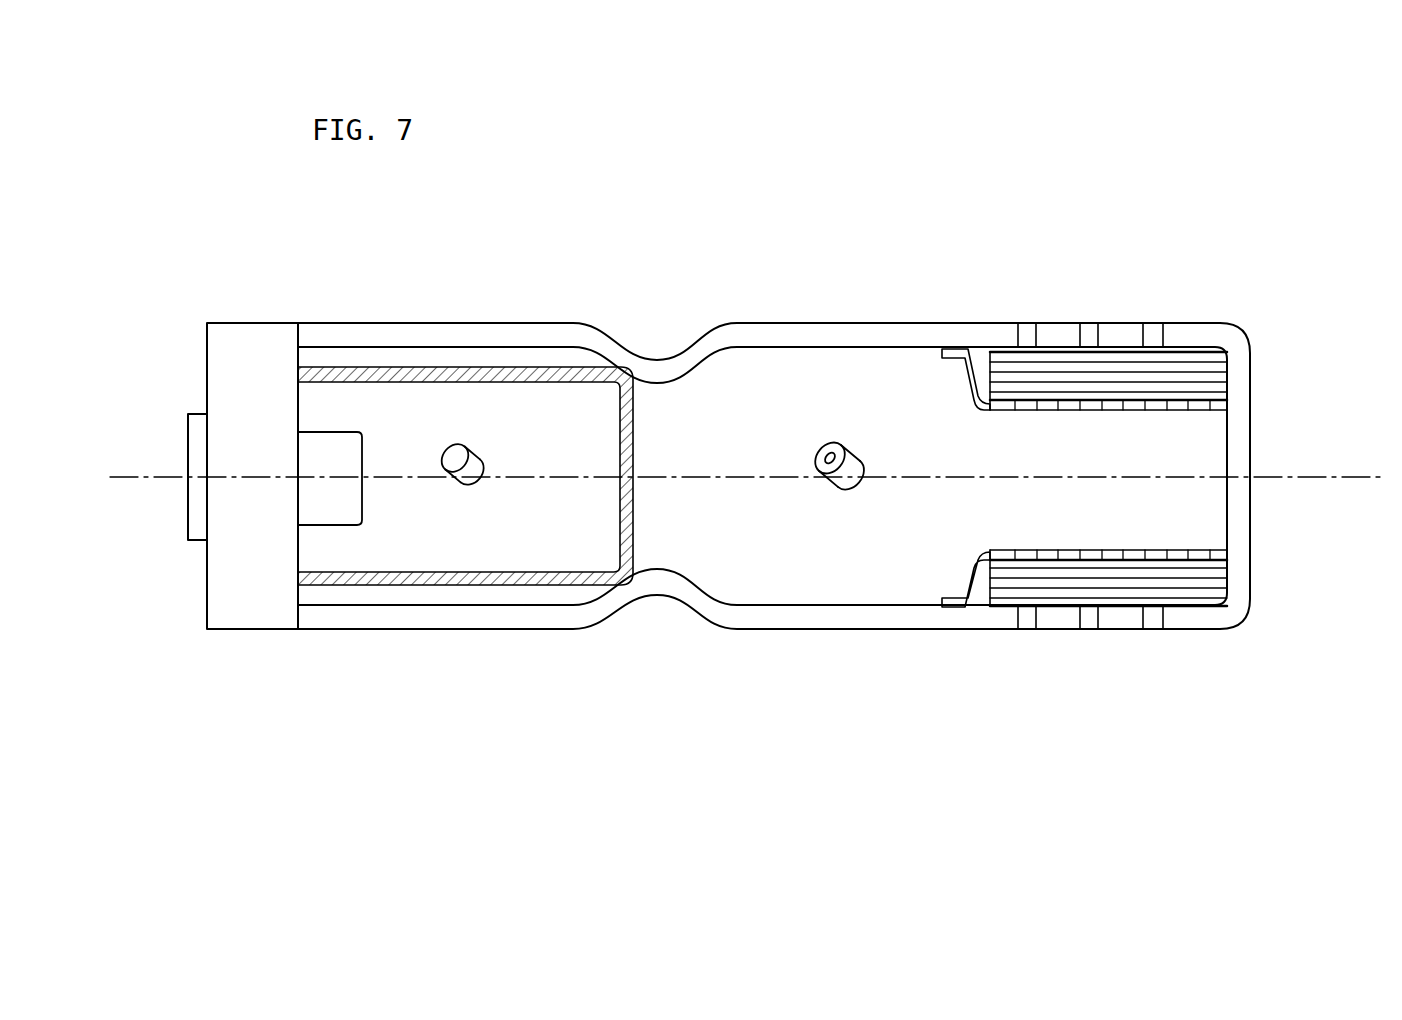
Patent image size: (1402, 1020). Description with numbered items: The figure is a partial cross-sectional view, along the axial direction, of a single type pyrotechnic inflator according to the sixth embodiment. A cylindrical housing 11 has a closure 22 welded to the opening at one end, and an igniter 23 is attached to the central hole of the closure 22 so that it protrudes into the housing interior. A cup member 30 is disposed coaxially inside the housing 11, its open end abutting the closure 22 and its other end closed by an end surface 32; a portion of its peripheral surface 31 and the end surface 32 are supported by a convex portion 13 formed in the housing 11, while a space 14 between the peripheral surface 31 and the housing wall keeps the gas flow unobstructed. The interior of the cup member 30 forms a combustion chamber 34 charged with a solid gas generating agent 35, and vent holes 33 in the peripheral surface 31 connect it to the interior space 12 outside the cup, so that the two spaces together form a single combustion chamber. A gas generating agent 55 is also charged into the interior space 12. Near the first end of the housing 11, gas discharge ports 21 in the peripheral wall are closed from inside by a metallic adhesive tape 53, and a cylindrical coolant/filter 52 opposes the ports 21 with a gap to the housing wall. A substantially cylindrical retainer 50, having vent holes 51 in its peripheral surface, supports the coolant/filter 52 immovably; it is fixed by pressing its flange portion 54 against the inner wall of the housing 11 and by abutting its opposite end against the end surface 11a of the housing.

The cylindrical housing 11 is at (770, 320).
The end surface of the cylindrical housing 11a is at (1225, 515).
The interior space 12 is at (860, 577).
The convex portion 13 is at (657, 386).
The space 14 is at (513, 355).
The gas discharge ports 21 is at (1153, 338).
The closure 22 is at (228, 372).
The igniter 23 is at (193, 432).
The cup member 30 is at (528, 475).
The peripheral surface 31 is at (368, 367).
The end surface 32 is at (637, 518).
The vent holes 33 is at (515, 586).
The combustion chamber 34 is at (438, 545).
The solid gas generating agent 35 is at (482, 458).
The retainer 50 is at (1062, 458).
The vent holes 51 is at (1163, 407).
The coolant/filter 52 is at (1197, 368).
The metallic adhesive tape 53 is at (1138, 607).
The flange portion 54 is at (955, 598).
The gas generating agent 55 is at (862, 485).